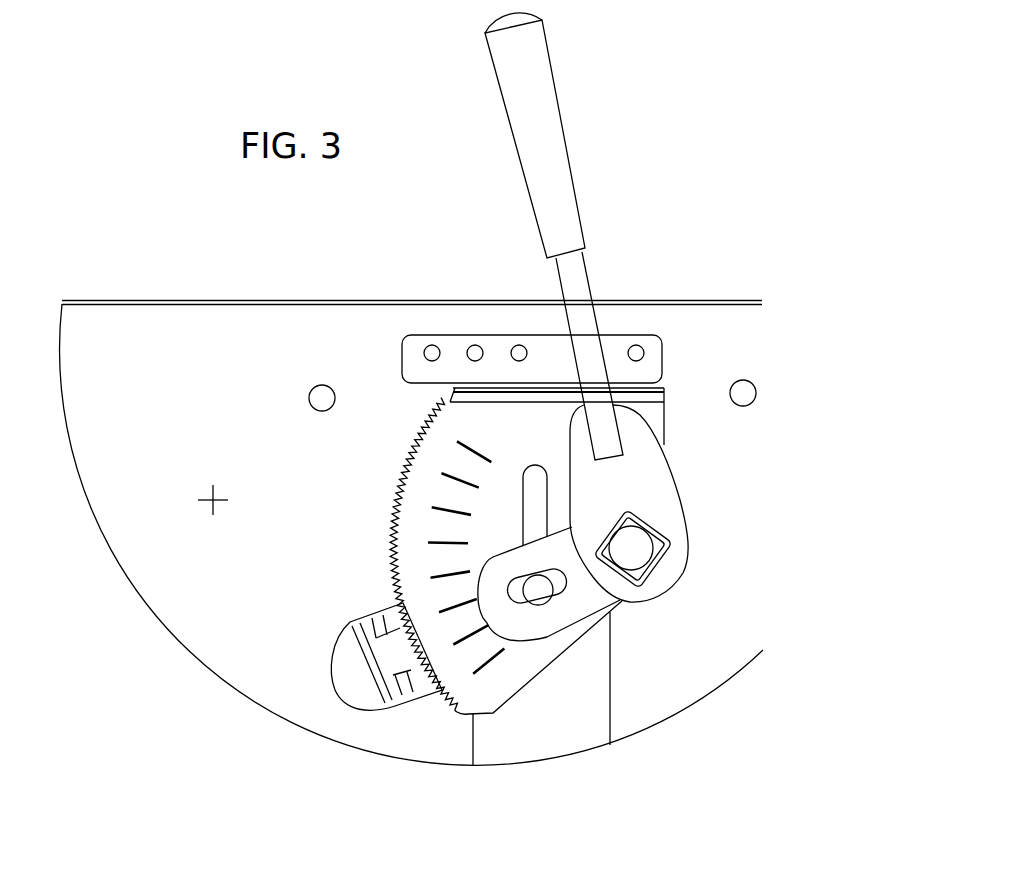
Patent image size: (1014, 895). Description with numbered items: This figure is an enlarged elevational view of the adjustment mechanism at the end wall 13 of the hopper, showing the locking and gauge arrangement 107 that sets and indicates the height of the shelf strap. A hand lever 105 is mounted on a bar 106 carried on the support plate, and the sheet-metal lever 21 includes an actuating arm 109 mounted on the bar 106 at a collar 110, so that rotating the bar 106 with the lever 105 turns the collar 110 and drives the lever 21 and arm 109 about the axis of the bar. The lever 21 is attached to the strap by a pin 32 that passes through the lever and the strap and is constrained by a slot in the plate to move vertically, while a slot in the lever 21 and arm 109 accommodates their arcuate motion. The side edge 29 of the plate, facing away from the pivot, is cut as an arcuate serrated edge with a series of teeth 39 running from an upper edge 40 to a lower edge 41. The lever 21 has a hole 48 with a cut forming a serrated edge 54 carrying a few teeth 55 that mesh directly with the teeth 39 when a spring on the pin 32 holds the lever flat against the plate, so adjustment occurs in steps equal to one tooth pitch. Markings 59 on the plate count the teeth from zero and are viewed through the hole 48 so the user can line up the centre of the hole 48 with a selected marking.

The end wall 13 is at (183, 337).
The lever 105 is at (557, 198).
The bar 106 is at (647, 527).
The collar 110 is at (660, 517).
The locking and gauge arrangement 107 is at (627, 638).
The actuating arm 109 is at (568, 610).
The pin 32 is at (540, 596).
The markings 59 is at (450, 513).
The upper edge 40 is at (437, 400).
The side edge 29 is at (400, 474).
The teeth 39 is at (474, 578).
The lower edge 41 is at (452, 707).
The hole 48 is at (388, 607).
The teeth 55 is at (407, 637).
The lever 21 is at (388, 668).
The serrated edge 54 is at (400, 703).